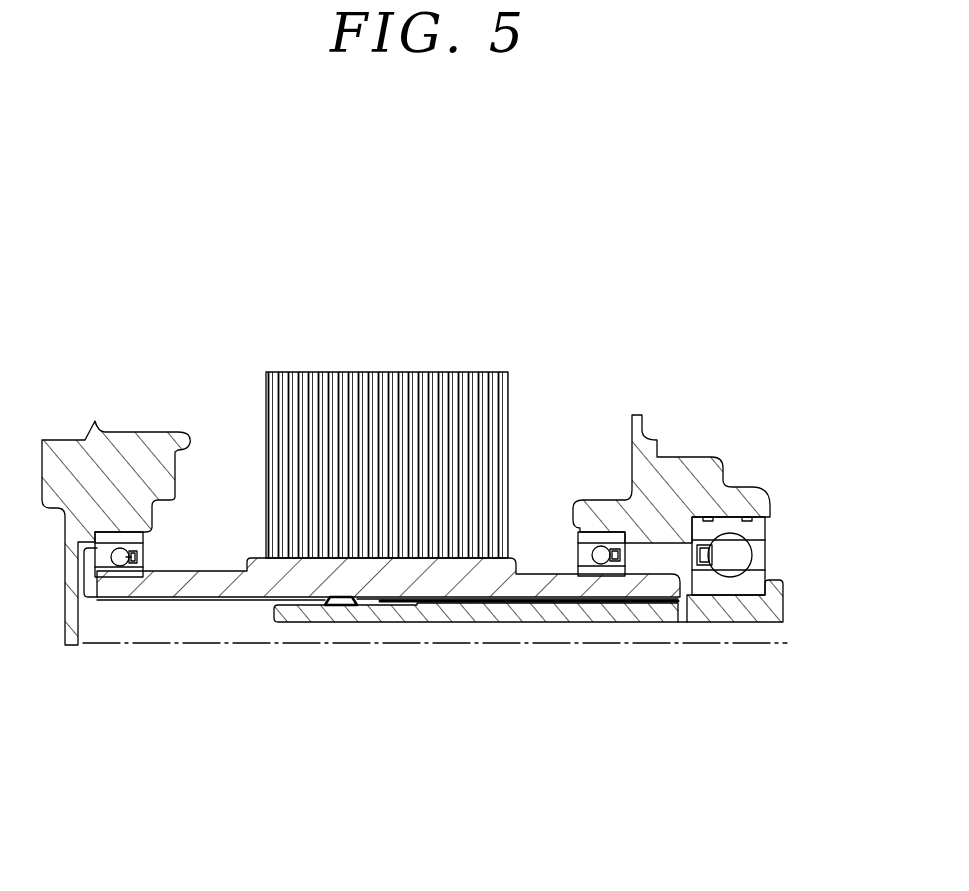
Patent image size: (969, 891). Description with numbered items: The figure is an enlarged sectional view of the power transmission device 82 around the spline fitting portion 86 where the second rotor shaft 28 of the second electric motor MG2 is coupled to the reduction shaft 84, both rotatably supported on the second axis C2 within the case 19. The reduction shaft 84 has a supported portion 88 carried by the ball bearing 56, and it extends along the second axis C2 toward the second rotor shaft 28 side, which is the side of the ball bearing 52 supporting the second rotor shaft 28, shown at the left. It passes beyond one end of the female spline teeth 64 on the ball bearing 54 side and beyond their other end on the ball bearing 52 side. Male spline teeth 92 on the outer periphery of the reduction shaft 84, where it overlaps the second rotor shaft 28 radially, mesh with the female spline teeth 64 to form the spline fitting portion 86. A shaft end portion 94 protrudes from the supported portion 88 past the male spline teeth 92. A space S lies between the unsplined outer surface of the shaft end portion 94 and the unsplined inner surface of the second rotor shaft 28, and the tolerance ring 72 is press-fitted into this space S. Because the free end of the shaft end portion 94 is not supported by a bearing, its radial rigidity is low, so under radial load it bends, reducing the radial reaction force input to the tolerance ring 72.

The power transmission device 82 is at (195, 275).
The second electric motor MG2 is at (287, 363).
The case 19 is at (75, 450).
The second rotor shaft 28 is at (235, 563).
The ball bearing 52 is at (132, 557).
The ball bearing 54 is at (598, 553).
The ball bearing 56 is at (728, 555).
The space S is at (273, 603).
The second axis C2 is at (147, 645).
The tolerance ring 72 is at (307, 612).
The shaft end portion 94 is at (336, 613).
The male spline teeth 92 is at (392, 602).
The spline fitting portion 86 is at (461, 623).
The female spline teeth 64 is at (523, 608).
The reduction shaft 84 is at (656, 634).
The supported portion 88 is at (737, 612).